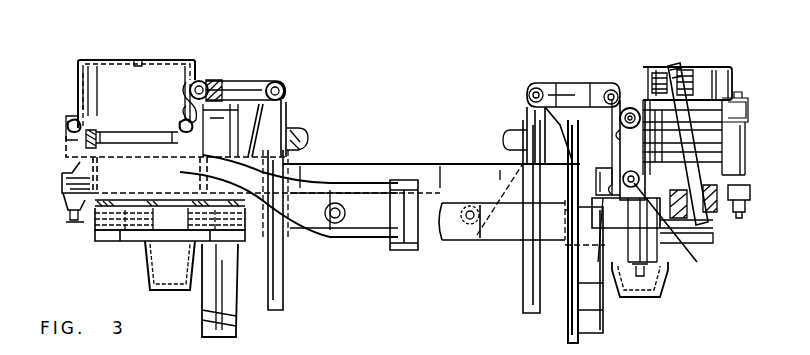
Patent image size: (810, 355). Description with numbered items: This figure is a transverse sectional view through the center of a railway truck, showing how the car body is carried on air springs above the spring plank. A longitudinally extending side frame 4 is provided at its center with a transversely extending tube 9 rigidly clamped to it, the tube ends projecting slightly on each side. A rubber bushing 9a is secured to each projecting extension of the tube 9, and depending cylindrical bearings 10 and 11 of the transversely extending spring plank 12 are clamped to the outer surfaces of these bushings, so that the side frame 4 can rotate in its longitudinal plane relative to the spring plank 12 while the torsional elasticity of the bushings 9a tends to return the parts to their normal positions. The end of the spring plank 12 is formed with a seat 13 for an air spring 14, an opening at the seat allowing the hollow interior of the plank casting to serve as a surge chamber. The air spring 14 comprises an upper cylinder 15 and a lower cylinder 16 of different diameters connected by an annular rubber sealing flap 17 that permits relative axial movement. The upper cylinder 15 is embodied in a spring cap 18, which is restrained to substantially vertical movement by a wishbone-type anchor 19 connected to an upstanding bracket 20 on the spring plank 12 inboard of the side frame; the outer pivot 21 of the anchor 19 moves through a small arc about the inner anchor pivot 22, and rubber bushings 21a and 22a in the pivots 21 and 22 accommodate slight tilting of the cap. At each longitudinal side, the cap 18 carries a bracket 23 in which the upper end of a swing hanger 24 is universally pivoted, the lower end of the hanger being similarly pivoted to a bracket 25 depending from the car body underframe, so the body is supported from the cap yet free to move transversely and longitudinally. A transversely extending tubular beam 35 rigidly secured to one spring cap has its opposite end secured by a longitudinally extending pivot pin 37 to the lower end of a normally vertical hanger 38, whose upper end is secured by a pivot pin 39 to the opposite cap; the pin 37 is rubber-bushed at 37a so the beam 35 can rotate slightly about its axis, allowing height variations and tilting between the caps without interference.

The side frame 4 is at (170, 292).
The transversely extending tube 9 is at (96, 226).
The rubber bushing 9a is at (96, 206).
The depending cylindrical bearing 10 is at (110, 243).
The depending cylindrical bearing 11 is at (238, 268).
The spring plank 12 is at (368, 244).
The seat 13 is at (137, 148).
The air spring 14 is at (83, 88).
The upper cylinder 15 is at (78, 70).
The lower cylinder 16 is at (86, 140).
The annular rubber sealing flap 17 is at (68, 128).
The spring cap 18 is at (106, 58).
The anchor 19 is at (246, 80).
The upstanding bracket 20 is at (290, 110).
The outer pivot 21 is at (203, 80).
The rubber bushing 21a is at (216, 80).
The inner anchor pivot 22 is at (280, 82).
The rubber bushing 22a is at (286, 96).
The bracket 23 is at (692, 62).
The swing hanger 24 is at (748, 133).
The bracket 25 is at (693, 237).
The tubular beam 35 is at (372, 162).
The pivot pin 37 is at (640, 178).
The rubber bushing 37a is at (700, 262).
The hanger 38 is at (627, 150).
The pivot pin 39 is at (630, 108).